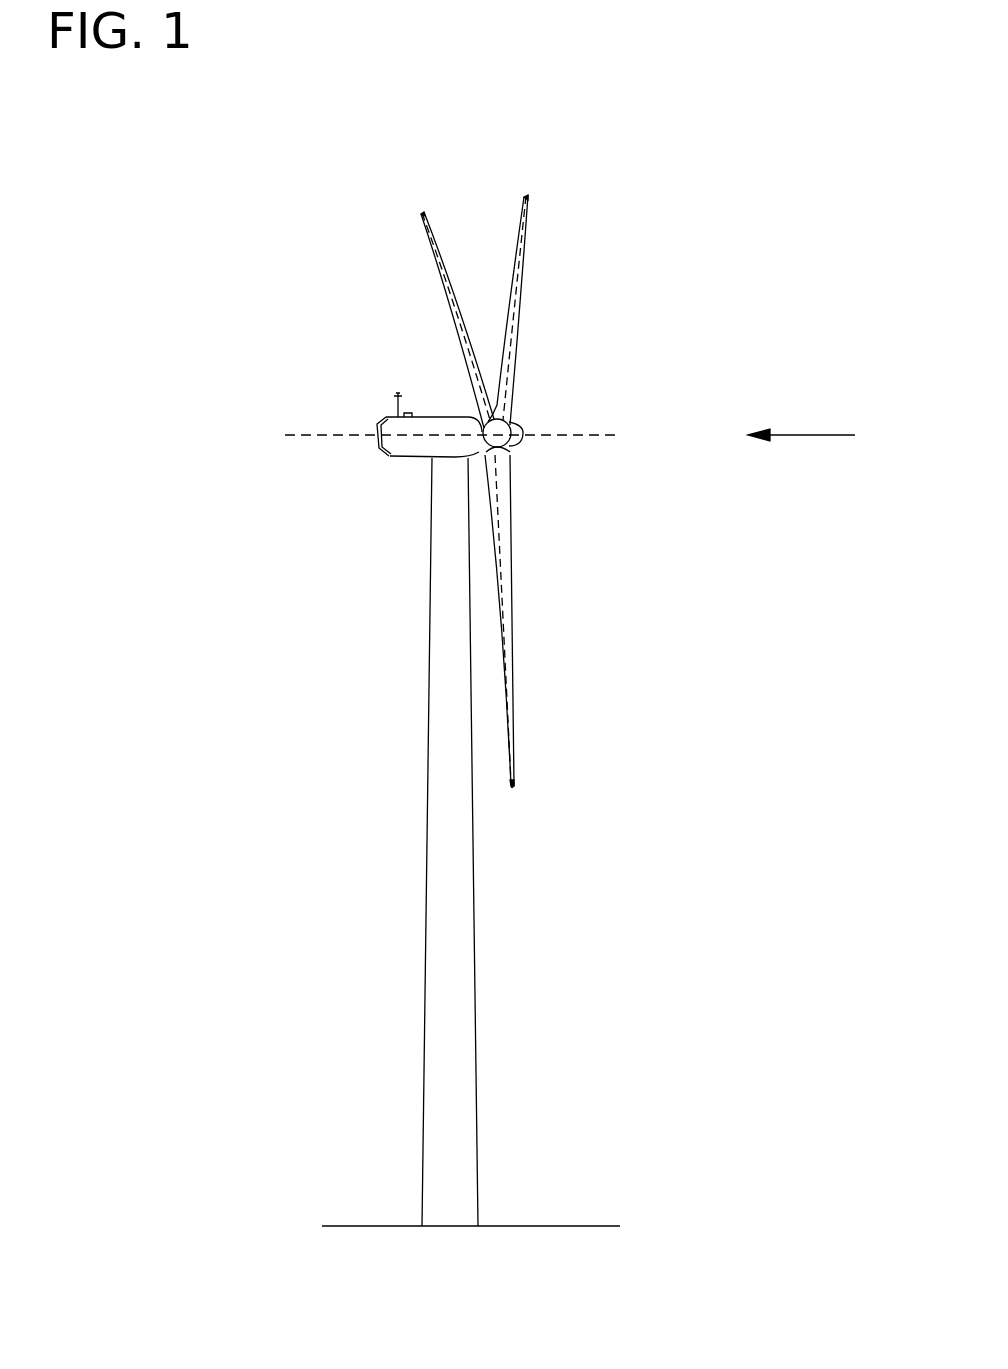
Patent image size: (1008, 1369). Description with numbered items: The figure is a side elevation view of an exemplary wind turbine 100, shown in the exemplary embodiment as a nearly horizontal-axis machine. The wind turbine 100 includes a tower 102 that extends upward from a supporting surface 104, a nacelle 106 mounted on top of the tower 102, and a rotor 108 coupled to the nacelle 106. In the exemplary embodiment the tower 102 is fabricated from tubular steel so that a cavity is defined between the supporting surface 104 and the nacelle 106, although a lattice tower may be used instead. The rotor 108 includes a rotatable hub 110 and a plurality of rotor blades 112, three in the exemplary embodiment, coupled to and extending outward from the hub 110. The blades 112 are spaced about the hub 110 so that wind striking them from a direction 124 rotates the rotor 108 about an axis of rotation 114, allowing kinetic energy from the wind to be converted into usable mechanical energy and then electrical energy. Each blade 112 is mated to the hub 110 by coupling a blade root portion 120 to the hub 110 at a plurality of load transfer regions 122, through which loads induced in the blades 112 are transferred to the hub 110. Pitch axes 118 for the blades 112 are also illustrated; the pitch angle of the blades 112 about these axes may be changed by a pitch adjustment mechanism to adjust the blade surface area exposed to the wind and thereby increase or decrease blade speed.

The wind turbine 100 is at (210, 229).
The tower 102 is at (424, 997).
The supporting surface 104 is at (378, 1226).
The nacelle 106 is at (402, 456).
The rotor 108 is at (524, 341).
The rotatable hub 110 is at (518, 432).
The rotor blades 112 is at (446, 284).
The axis of rotation 114 is at (583, 437).
The pitch axes 118 is at (418, 218).
The blade root portion 120 is at (507, 512).
The load transfer regions 122 is at (506, 458).
The direction 124 is at (822, 435).